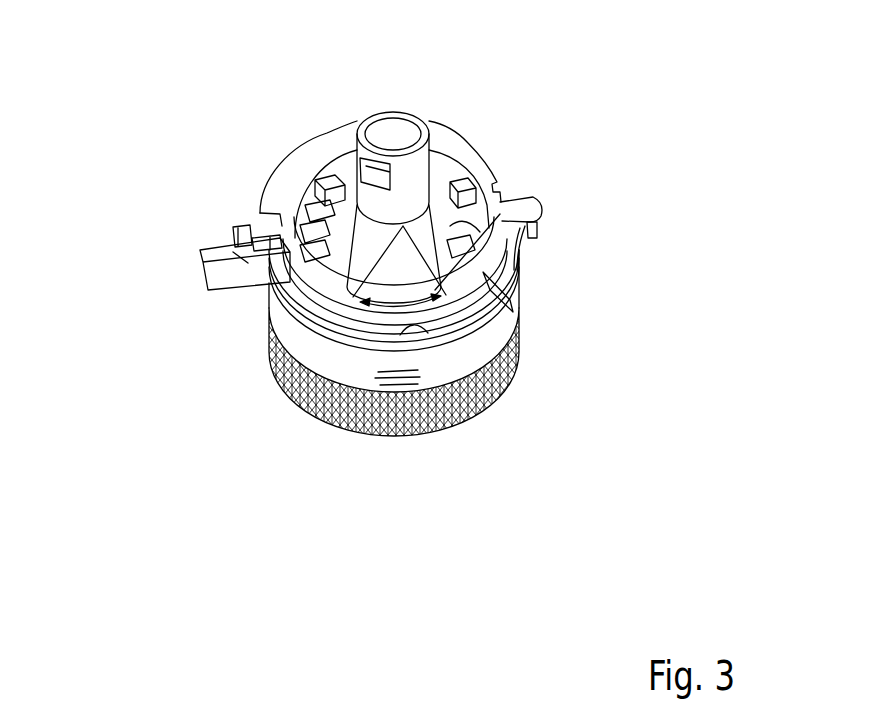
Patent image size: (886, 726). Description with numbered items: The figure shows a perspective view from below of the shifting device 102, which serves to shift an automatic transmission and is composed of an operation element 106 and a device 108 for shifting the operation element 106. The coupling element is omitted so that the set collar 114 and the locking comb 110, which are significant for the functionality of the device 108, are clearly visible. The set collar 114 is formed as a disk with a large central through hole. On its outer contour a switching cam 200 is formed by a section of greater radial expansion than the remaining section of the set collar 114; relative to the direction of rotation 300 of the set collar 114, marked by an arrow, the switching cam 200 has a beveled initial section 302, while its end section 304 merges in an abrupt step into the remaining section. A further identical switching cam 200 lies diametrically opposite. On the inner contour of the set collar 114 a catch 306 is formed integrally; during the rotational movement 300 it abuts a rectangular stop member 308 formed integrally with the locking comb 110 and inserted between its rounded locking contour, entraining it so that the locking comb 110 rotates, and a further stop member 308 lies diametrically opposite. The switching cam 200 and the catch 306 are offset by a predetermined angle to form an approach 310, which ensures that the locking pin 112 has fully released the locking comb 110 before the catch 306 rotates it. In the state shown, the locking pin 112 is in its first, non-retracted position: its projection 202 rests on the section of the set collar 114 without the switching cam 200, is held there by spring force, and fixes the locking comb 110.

The shifting device 102 is at (437, 108).
The operation element 106 is at (505, 398).
The device for shifting the operation element 108 is at (540, 263).
The locking comb 110 is at (518, 274).
The locking pin 112 is at (222, 258).
The set collar 114 is at (252, 194).
The switching cam 200 is at (277, 190).
The projection 202 is at (539, 228).
The direction of rotation 300 is at (444, 279).
The initial section 302 is at (350, 312).
The end section 304 is at (515, 229).
The catch 306 is at (518, 332).
The stop member 308 is at (334, 178).
The approach 310 is at (373, 312).